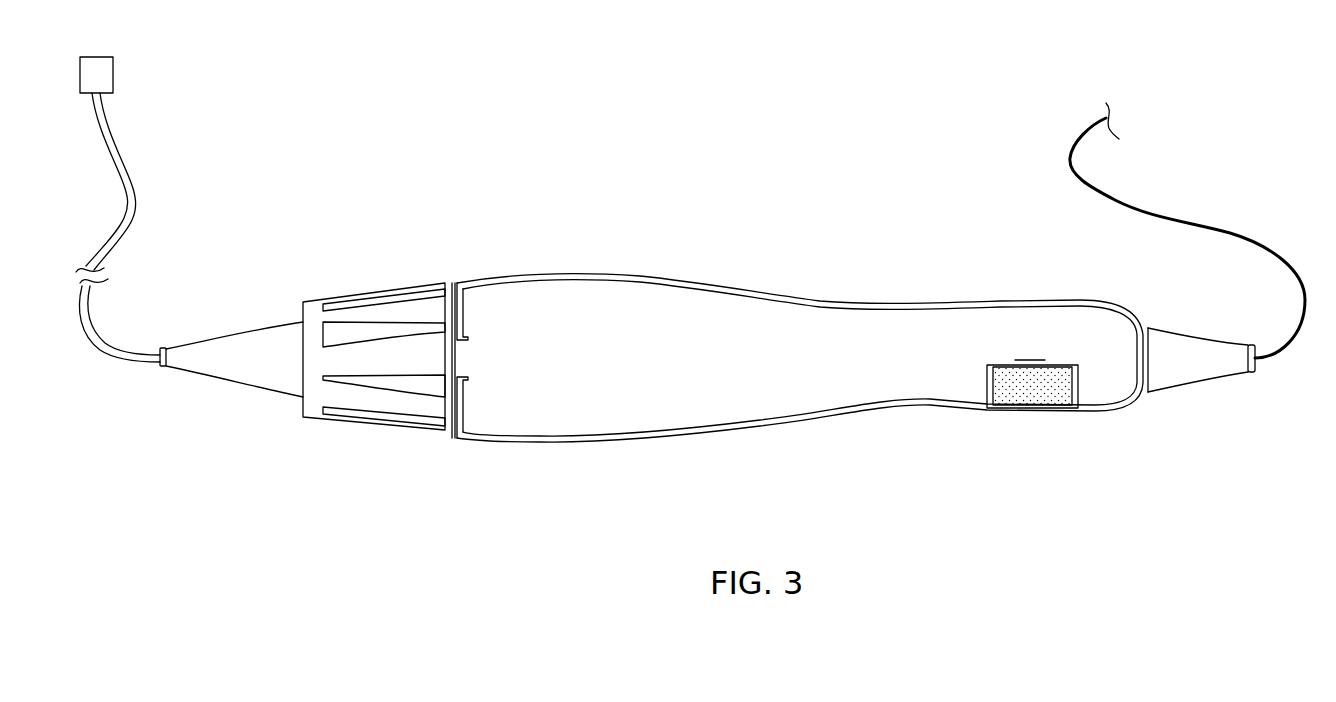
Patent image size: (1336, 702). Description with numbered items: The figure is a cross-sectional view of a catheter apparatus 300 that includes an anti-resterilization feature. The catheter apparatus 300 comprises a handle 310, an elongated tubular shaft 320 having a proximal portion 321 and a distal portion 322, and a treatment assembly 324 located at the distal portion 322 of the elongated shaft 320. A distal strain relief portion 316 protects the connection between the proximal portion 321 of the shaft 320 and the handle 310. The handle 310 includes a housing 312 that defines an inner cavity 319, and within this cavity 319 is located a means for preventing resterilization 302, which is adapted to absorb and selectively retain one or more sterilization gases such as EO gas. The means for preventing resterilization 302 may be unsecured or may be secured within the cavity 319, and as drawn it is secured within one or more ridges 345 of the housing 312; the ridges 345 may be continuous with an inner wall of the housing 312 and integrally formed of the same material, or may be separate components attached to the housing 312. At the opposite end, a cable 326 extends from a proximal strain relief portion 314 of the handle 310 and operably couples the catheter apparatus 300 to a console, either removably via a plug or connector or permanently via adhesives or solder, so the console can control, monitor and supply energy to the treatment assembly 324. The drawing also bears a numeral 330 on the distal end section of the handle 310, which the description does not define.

The catheter apparatus 300 is at (455, 168).
The means for preventing resterilization 302 is at (1033, 380).
The handle 310 is at (797, 330).
The housing 312 is at (766, 291).
The proximal strain relief portion 314 is at (1210, 362).
The distal strain relief portion 316 is at (242, 365).
The inner cavity 319 is at (655, 369).
The elongated tubular shaft 320 is at (148, 227).
The proximal portion 321 is at (158, 347).
The distal portion 322 is at (115, 135).
The treatment assembly 324 is at (113, 75).
The cable 326 is at (1233, 232).
The cap / lancet holder 330 is at (392, 430).
The ridges 345 is at (1028, 360).